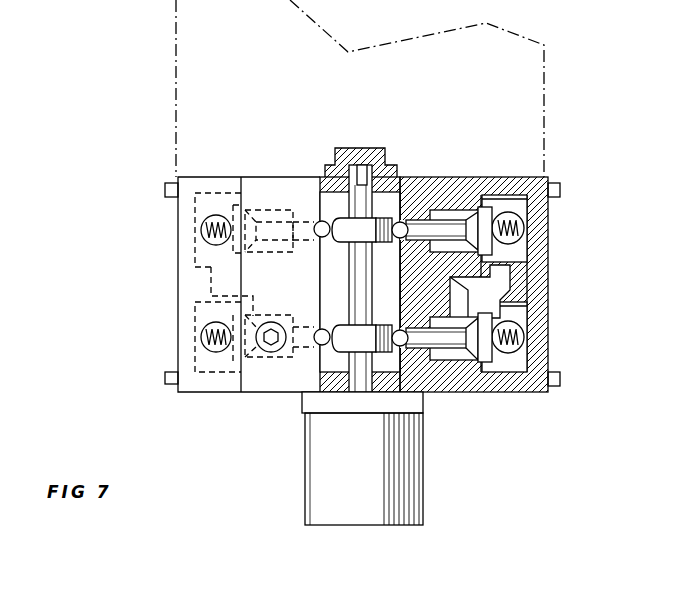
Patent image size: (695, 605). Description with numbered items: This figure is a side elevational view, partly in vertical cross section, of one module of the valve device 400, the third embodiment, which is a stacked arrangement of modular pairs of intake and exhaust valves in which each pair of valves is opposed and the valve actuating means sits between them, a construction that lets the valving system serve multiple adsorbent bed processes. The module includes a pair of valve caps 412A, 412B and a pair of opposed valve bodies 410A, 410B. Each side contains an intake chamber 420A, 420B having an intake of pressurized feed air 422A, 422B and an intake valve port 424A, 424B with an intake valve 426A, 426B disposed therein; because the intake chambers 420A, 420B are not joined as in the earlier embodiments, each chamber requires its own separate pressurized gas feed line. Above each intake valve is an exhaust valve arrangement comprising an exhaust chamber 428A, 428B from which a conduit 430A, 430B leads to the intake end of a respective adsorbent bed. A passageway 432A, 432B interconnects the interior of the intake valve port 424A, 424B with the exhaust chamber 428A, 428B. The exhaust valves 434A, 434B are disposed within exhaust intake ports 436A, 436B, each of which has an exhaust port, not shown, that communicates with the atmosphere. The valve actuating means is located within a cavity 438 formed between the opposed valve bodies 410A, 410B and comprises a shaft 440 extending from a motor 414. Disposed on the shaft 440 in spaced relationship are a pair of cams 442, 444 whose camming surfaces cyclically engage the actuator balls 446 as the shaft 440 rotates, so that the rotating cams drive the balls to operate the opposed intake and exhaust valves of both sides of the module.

The valve device 400 is at (416, 117).
The valve body 410A is at (237, 393).
The valve body 410B is at (489, 394).
The valve cap 412A is at (177, 250).
The valve cap 412B is at (549, 295).
The motor 414 is at (370, 484).
The intake chamber 420A is at (210, 372).
The intake chamber 420B is at (518, 360).
The intake of pressurized feed air 422A is at (210, 346).
The intake of pressurized feed air 422B is at (500, 372).
The intake valve port 424A is at (257, 354).
The intake valve port 424B is at (480, 358).
The intake valve 426A is at (306, 348).
The intake valve 426B is at (447, 360).
The exhaust chamber 428A is at (208, 192).
The exhaust chamber 428B is at (549, 177).
The conduit 430A is at (212, 216).
The conduit 430B is at (518, 244).
The passageway 432A is at (215, 290).
The passageway 432B is at (512, 275).
The exhaust valve 434A is at (250, 210).
The exhaust valve 434B is at (470, 222).
The exhaust intake port 436A is at (266, 218).
The exhaust intake port 436B is at (462, 215).
The cavity 438 is at (333, 202).
The shaft 440 is at (362, 228).
The cam 442 is at (362, 340).
The cam 444 is at (412, 200).
The actuator balls 446 is at (318, 222).